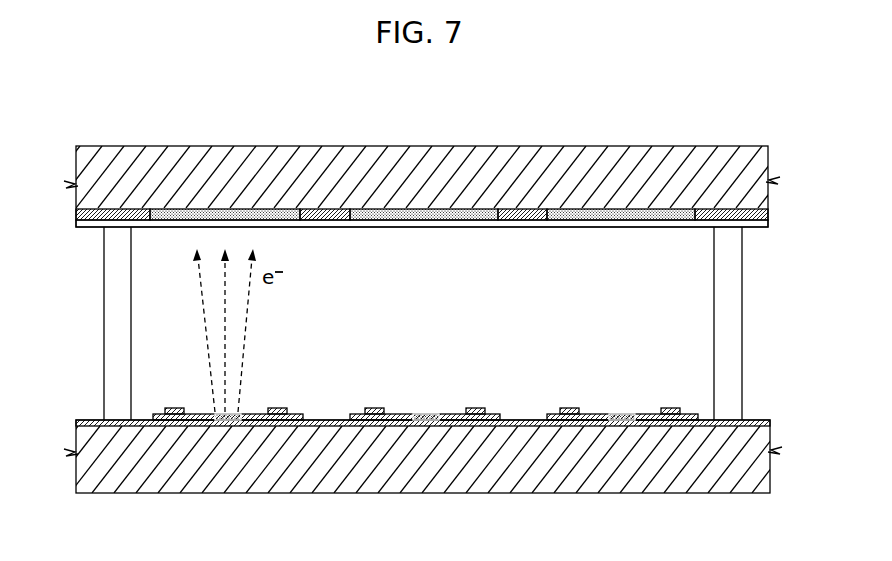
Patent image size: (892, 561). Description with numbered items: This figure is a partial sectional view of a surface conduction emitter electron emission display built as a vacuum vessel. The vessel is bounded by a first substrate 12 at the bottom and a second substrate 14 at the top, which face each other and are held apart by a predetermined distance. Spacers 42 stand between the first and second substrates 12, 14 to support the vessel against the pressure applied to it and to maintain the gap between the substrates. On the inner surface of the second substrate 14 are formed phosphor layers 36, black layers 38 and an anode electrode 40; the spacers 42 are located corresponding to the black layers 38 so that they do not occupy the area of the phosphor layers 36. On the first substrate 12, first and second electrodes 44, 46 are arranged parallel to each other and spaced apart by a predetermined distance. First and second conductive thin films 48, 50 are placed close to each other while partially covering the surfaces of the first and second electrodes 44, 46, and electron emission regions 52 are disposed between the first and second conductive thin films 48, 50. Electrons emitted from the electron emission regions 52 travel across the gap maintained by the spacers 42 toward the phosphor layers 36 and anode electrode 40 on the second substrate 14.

The first substrate 12 is at (276, 482).
The second substrate 14 is at (259, 158).
The phosphor layer 36 is at (432, 208).
The black layer 38 is at (516, 212).
The anode electrode 40 is at (590, 224).
The spacer 42 is at (109, 343).
The first electrode 44 is at (370, 424).
The second electrode 46 is at (497, 426).
The first conductive thin film 48 is at (373, 408).
The second conductive thin film 50 is at (471, 408).
The electron emission region 52 is at (432, 426).